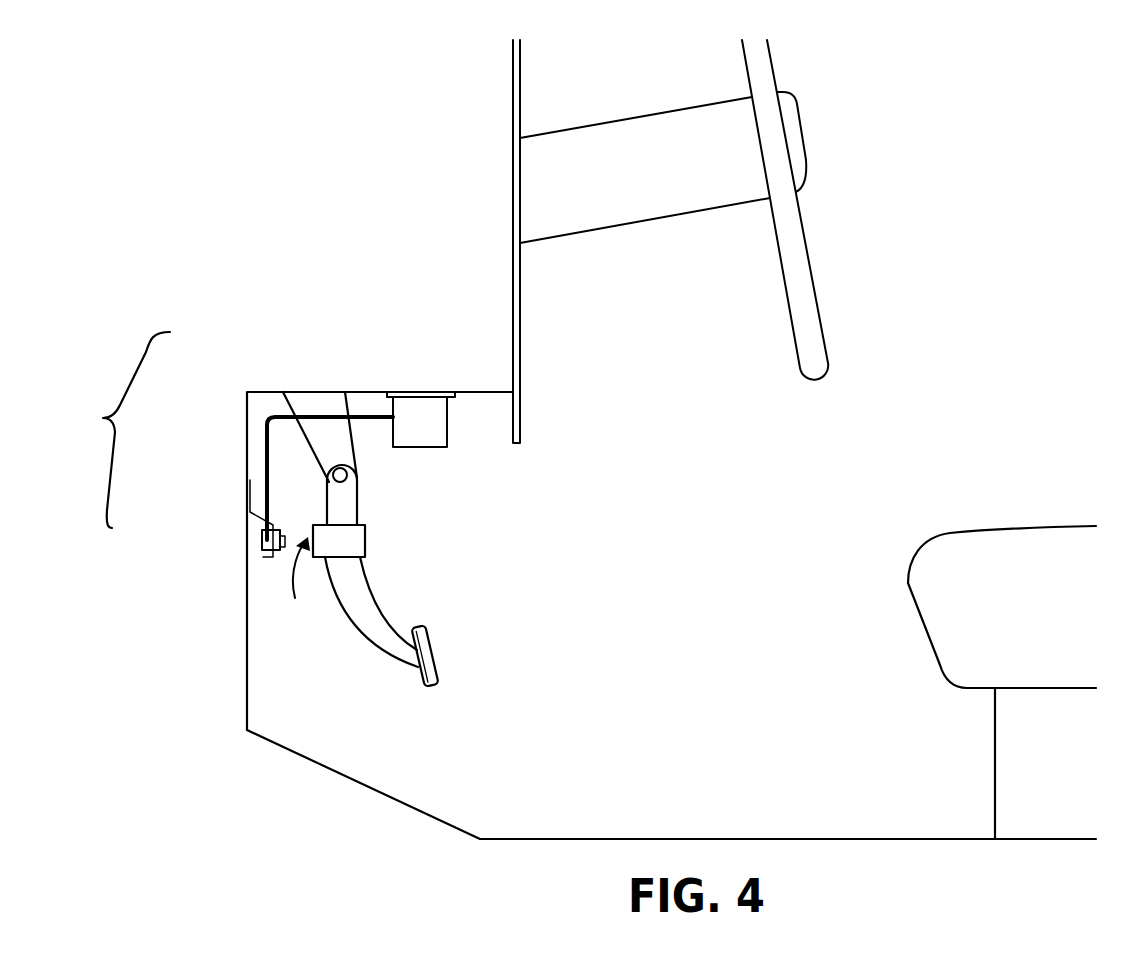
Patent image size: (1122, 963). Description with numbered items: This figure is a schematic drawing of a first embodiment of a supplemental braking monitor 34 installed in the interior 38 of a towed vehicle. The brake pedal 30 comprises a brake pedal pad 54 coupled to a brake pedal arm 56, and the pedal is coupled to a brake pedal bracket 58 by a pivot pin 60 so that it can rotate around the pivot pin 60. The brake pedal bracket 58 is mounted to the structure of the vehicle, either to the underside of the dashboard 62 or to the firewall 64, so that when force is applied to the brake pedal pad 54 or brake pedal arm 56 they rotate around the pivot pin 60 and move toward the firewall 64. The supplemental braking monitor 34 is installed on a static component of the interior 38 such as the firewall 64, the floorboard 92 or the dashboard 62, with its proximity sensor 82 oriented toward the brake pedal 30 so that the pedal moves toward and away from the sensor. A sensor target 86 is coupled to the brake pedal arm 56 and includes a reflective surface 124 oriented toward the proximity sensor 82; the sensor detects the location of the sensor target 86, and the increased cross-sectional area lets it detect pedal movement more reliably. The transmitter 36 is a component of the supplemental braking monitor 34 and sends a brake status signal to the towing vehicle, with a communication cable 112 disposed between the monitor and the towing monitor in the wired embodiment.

The brake pedal 30 is at (378, 533).
The supplemental braking monitor 34 is at (123, 430).
The transmitter 36 is at (405, 408).
The interior 38 is at (975, 278).
The brake pedal pad 54 is at (428, 630).
The brake pedal arm 56 is at (362, 632).
The brake pedal bracket 58 is at (313, 407).
The pivot pin 60 is at (348, 475).
The dashboard 62 is at (500, 390).
The firewall 64 is at (247, 558).
The proximity sensor 82 is at (263, 537).
The sensor target 86 is at (345, 540).
The floorboard 92 is at (522, 839).
The communication cable 112 is at (265, 418).
The reflective surface 124 is at (302, 581).